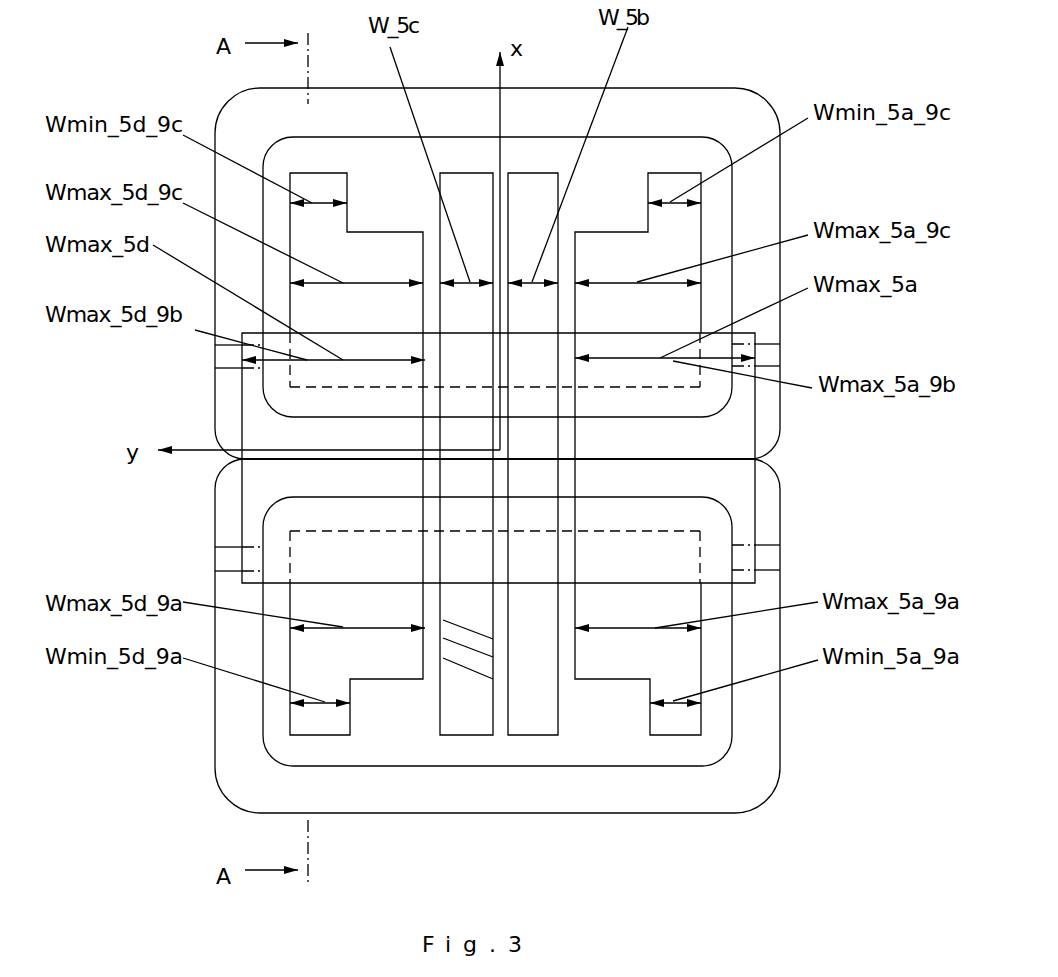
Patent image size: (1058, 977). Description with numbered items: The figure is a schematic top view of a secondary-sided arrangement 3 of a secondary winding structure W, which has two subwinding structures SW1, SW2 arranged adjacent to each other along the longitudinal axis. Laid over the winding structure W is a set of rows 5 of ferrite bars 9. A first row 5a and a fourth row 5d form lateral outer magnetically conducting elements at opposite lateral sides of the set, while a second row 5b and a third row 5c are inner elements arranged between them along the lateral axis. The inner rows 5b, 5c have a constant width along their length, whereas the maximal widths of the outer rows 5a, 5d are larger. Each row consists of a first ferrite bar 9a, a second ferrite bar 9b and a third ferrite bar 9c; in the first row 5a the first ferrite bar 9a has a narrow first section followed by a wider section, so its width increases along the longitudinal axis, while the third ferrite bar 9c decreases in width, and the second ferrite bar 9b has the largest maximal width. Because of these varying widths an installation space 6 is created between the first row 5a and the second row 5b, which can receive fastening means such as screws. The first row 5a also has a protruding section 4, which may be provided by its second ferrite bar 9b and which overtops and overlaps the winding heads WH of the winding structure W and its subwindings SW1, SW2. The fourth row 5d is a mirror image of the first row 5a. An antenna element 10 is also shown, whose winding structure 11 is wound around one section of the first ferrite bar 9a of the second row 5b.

The secondary-sided arrangement 3 is at (140, 716).
The protruding section 4 is at (258, 497).
The rows 5 is at (526, 535).
The first row 5a is at (683, 735).
The second row 5b is at (528, 734).
The third row 5c is at (478, 734).
The fourth row 5d is at (318, 734).
The installation space 6 is at (391, 208).
The ferrite bars 9 is at (495, 457).
The first ferrite bar 9a is at (307, 721).
The second ferrite bar 9b is at (460, 443).
The third ferrite bar 9c is at (317, 183).
The antenna element 10 is at (470, 673).
The winding structure of the antenna element 11 is at (460, 624).
The secondary winding structure W is at (765, 810).
The winding heads WH is at (227, 355).
The first subwinding structure SW1 is at (769, 770).
The second subwinding structure SW2 is at (758, 190).